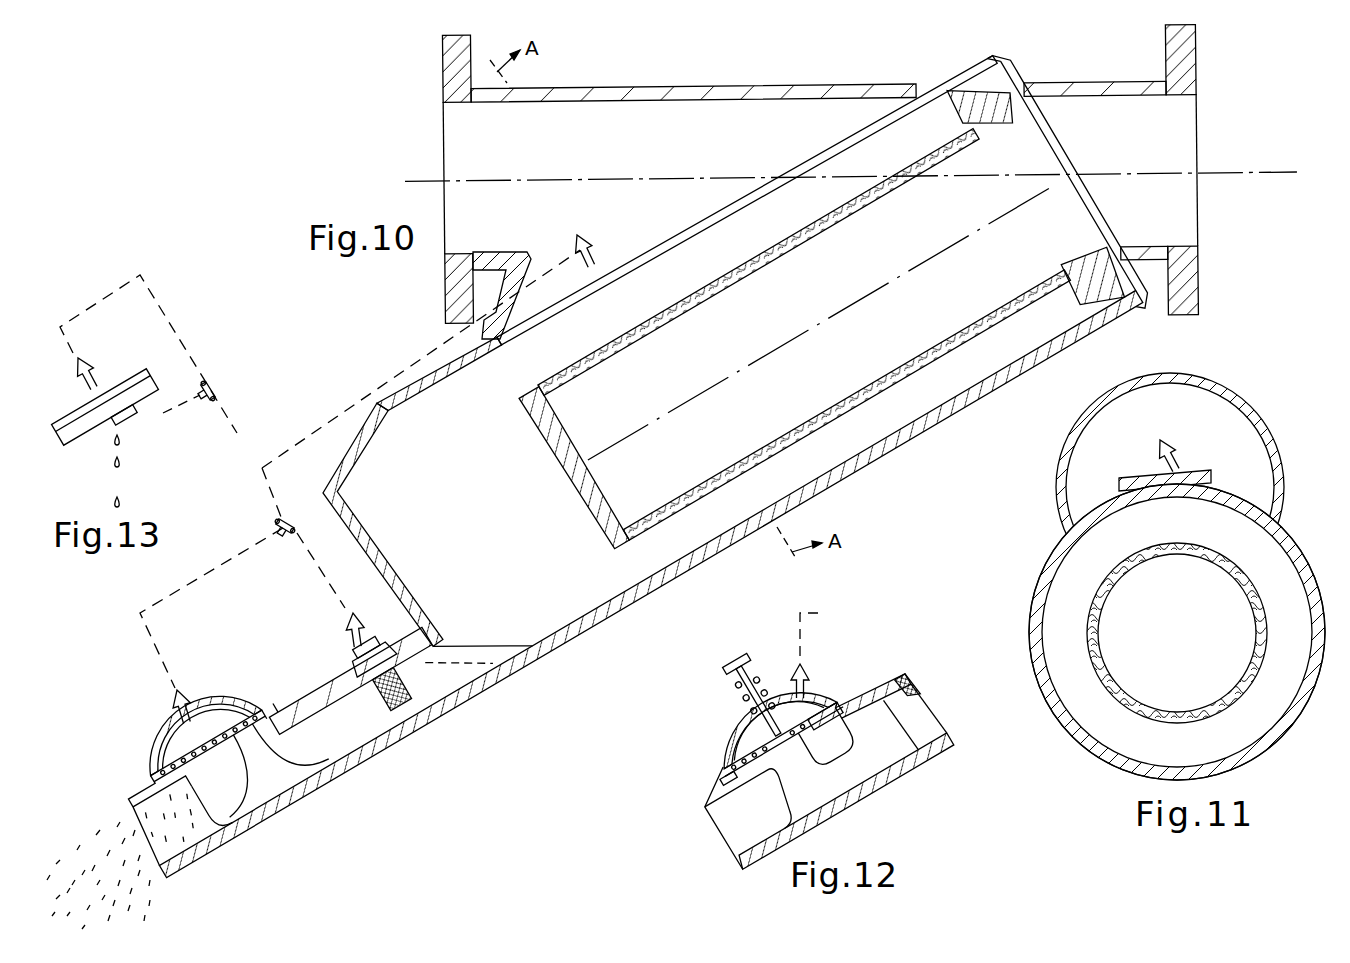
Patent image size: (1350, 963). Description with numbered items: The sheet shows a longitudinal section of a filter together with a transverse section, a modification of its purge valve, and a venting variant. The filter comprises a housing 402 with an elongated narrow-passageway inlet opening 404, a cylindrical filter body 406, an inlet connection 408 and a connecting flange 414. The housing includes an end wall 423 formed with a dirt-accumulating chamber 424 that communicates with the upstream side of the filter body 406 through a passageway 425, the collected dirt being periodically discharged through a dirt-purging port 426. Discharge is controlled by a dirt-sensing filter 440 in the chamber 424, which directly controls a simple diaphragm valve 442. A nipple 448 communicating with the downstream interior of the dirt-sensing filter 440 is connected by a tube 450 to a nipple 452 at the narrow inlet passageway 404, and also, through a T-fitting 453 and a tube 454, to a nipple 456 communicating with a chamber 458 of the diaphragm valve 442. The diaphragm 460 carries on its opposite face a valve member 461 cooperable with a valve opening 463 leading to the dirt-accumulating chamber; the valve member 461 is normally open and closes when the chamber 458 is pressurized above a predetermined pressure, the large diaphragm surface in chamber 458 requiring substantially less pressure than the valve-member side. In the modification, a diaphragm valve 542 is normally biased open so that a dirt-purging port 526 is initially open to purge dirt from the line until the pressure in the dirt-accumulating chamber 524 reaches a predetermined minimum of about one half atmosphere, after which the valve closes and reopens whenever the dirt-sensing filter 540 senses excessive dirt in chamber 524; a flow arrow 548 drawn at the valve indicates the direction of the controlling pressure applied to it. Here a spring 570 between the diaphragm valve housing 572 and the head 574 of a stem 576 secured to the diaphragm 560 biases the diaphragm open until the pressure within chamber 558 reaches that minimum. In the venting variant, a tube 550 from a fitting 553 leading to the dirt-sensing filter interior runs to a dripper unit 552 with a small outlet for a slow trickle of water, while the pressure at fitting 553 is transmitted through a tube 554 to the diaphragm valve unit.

In FIG. 10, the housing 402 is at (686, 575).
In FIG. 11, the housing 402 is at (1292, 533).
In FIG. 10, the inlet opening 404 is at (538, 330).
In FIG. 11, the inlet opening 404 is at (1139, 470).
In FIG. 10, the cylindrical filter body 406 is at (655, 308).
In FIG. 11, the cylindrical filter body 406 is at (1156, 546).
In FIG. 10, the inlet connection 408 is at (467, 263).
In FIG. 11, the inlet connection 408 is at (1206, 384).
In FIG. 10, the connecting flange 414 is at (445, 303).
In FIG. 10, the end wall 423 is at (389, 568).
In FIG. 10, the dirt-accumulating chamber 424 is at (441, 682).
In FIG. 10, the passageway 425 is at (465, 655).
In FIG. 10, the dirt-purging port 426 is at (143, 866).
In FIG. 10, the dirt-sensing filter 440 is at (385, 700).
In FIG. 10, the diaphragm valve 442 is at (157, 734).
In FIG. 10, the nipple 448 is at (350, 645).
In FIG. 10, the tube 450 is at (309, 433).
In FIG. 10, the nipple 452 is at (590, 250).
In FIG. 11, the nipple 452 is at (1184, 460).
In FIG. 10, the T-fitting 453 is at (290, 515).
In FIG. 10, the tube 454 is at (205, 575).
In FIG. 10, the nipple 456 is at (187, 675).
In FIG. 10, the chamber 458 is at (201, 726).
In FIG. 10, the diaphragm 460 is at (156, 757).
In FIG. 10, the valve member 461 is at (150, 780).
In FIG. 10, the valve opening 463 is at (257, 813).
In FIG. 12, the dirt-accumulating chamber 524 is at (923, 767).
In FIG. 12, the dirt-purging port 526 is at (730, 817).
In FIG. 12, the dirt-sensing filter 540 is at (923, 705).
In FIG. 12, the diaphragm valve 542 is at (722, 738).
In FIG. 12, the flow arrow 548 is at (812, 675).
In FIG. 13, the tube 550 is at (113, 280).
In FIG. 13, the dripper unit 552 is at (118, 380).
In FIG. 13, the fitting 553 is at (212, 388).
In FIG. 12, the tube 554 is at (826, 612).
In FIG. 13, the tube 554 is at (183, 412).
In FIG. 12, the chamber 558 is at (723, 750).
In FIG. 12, the diaphragm 560 is at (820, 700).
In FIG. 12, the spring 570 is at (740, 690).
In FIG. 12, the diaphragm valve housing 572 is at (767, 690).
In FIG. 12, the head 574 is at (730, 663).
In FIG. 12, the stem 576 is at (753, 717).